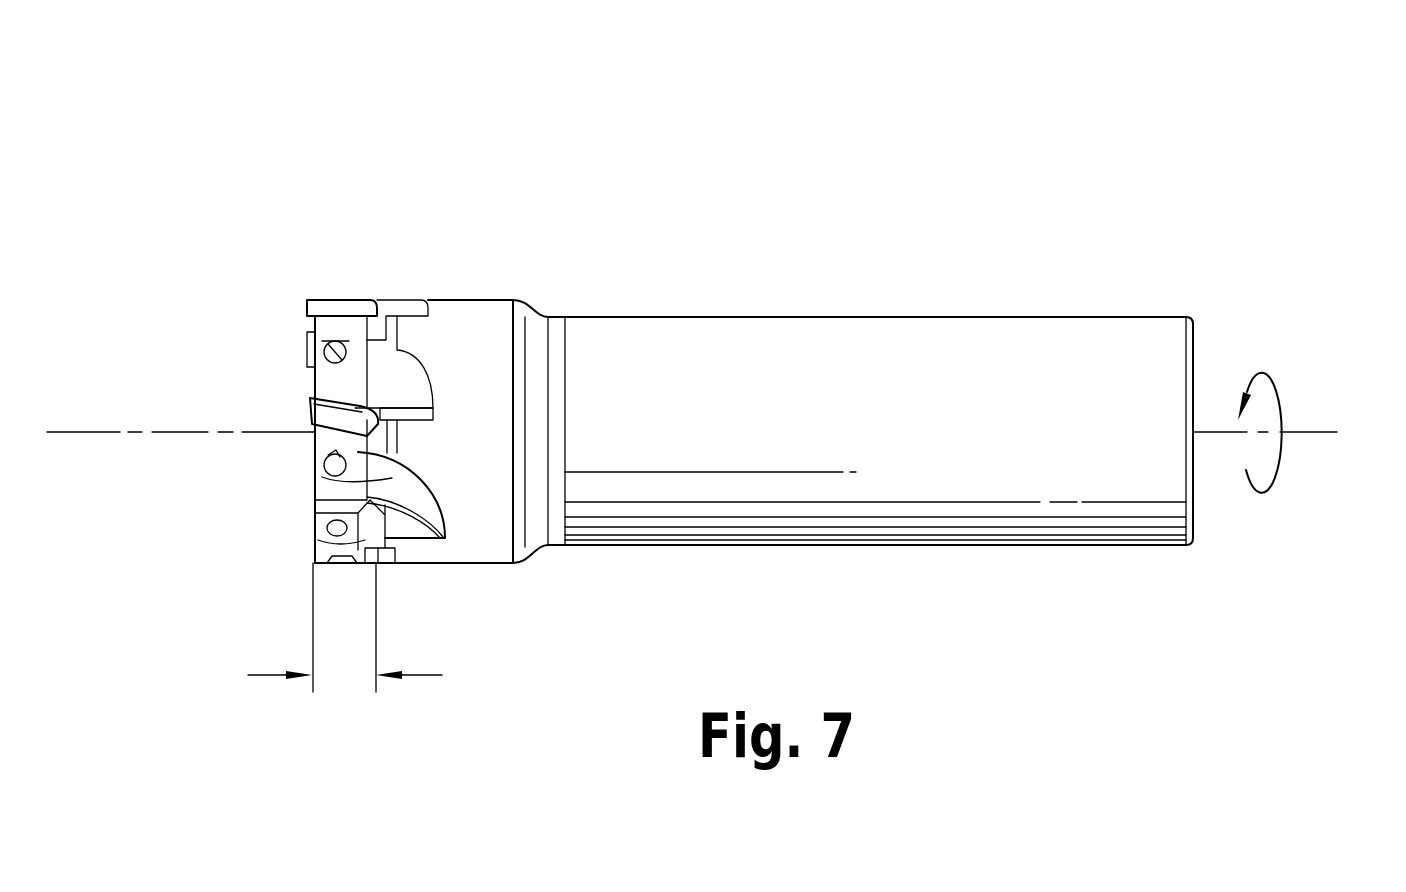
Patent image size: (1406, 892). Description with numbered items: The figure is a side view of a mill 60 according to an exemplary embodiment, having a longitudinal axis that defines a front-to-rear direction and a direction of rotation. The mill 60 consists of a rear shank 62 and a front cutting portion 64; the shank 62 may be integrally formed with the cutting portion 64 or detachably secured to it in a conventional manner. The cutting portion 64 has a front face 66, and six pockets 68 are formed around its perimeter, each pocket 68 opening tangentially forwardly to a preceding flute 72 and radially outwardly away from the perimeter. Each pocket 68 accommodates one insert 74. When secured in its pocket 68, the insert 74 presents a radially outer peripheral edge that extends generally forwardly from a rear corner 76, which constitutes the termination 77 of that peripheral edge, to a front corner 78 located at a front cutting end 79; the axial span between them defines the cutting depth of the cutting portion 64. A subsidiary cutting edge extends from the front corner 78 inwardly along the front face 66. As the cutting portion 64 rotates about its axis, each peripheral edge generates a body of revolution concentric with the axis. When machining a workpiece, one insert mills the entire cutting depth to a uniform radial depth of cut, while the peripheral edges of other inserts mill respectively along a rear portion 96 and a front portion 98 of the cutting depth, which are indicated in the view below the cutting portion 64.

The mill 60 is at (436, 128).
The rear shank 62 is at (910, 317).
The front cutting portion 64 is at (348, 235).
The front face 66 is at (182, 467).
The pocket 68 is at (372, 510).
The flute 72 is at (392, 480).
The insert 74 is at (310, 418).
The rear corner 76 is at (380, 298).
The termination of the outer peripheral edge 77 is at (378, 565).
The front corner 78 is at (310, 397).
The front cutting end 79 is at (312, 565).
The rear portion of the cutting depth 96 is at (364, 716).
The front portion of the cutting depth 98 is at (322, 720).